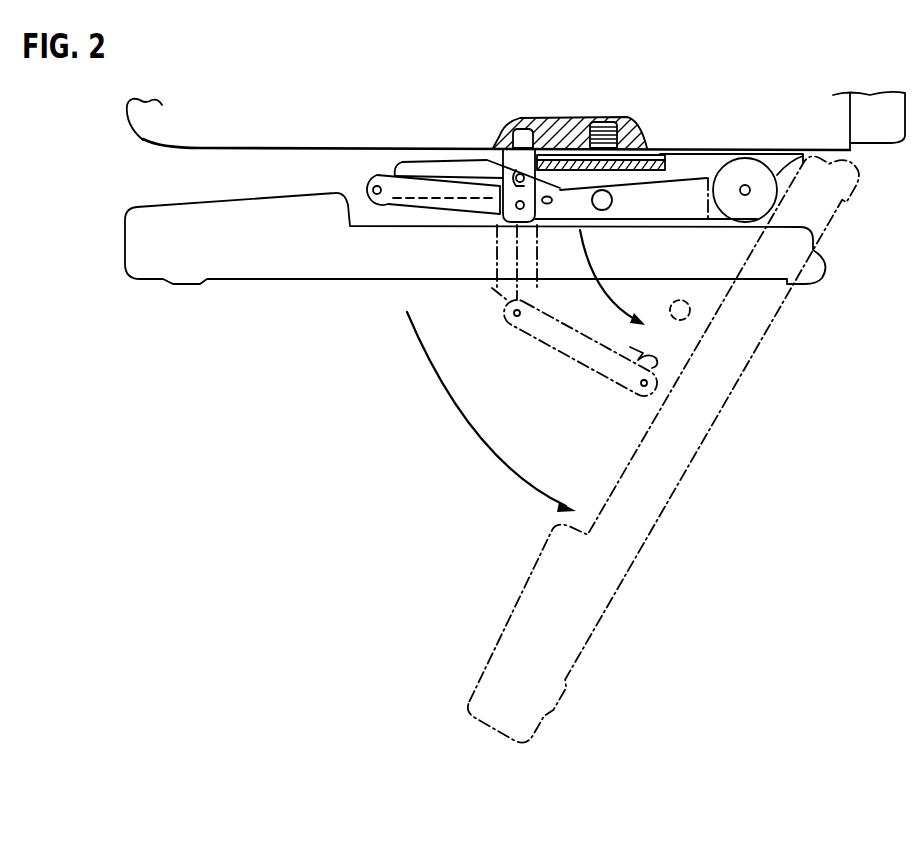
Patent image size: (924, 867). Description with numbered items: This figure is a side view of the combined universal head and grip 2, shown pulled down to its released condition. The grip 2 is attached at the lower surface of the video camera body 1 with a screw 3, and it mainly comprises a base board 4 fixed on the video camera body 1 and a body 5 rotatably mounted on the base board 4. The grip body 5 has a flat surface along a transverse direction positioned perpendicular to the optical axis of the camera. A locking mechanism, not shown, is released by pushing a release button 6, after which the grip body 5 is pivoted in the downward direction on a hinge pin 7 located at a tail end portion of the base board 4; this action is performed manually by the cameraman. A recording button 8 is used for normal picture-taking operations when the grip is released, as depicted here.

The video camera body 1 is at (141, 114).
The combined universal head and grip 2 is at (288, 327).
The screw 3 is at (657, 150).
The base board 4 is at (802, 160).
The grip body 5 is at (378, 262).
The release button 6 is at (613, 200).
The hinge pin 7 is at (745, 185).
The recording button 8 is at (492, 250).